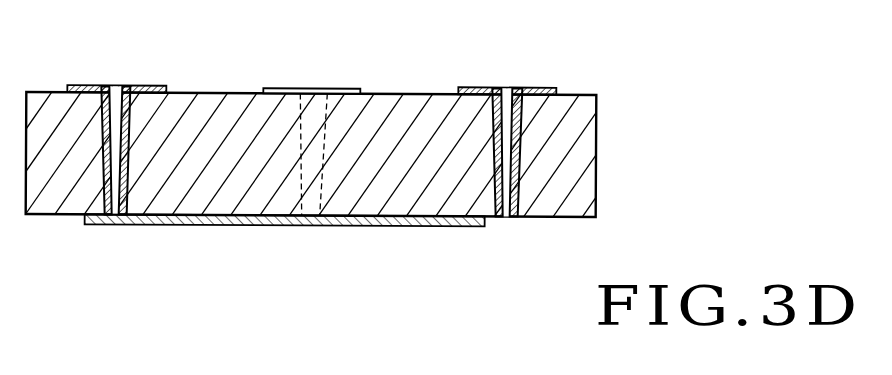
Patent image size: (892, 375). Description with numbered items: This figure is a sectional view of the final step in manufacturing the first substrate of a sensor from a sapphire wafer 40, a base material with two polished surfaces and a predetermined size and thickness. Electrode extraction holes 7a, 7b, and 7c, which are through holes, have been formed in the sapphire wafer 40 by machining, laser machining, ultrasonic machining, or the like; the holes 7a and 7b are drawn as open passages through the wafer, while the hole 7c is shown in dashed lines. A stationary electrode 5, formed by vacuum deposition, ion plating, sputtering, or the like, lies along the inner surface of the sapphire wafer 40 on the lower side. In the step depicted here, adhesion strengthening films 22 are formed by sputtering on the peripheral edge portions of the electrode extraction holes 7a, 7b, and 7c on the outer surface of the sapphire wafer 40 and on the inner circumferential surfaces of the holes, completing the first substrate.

The sapphire wafer 40 is at (597, 162).
The adhesion strengthening films 22 is at (283, 87).
The electrode extraction hole 7a is at (114, 100).
The electrode extraction hole 7b is at (507, 106).
The electrode extraction hole 7c is at (306, 87).
The stationary electrode 5 is at (370, 226).